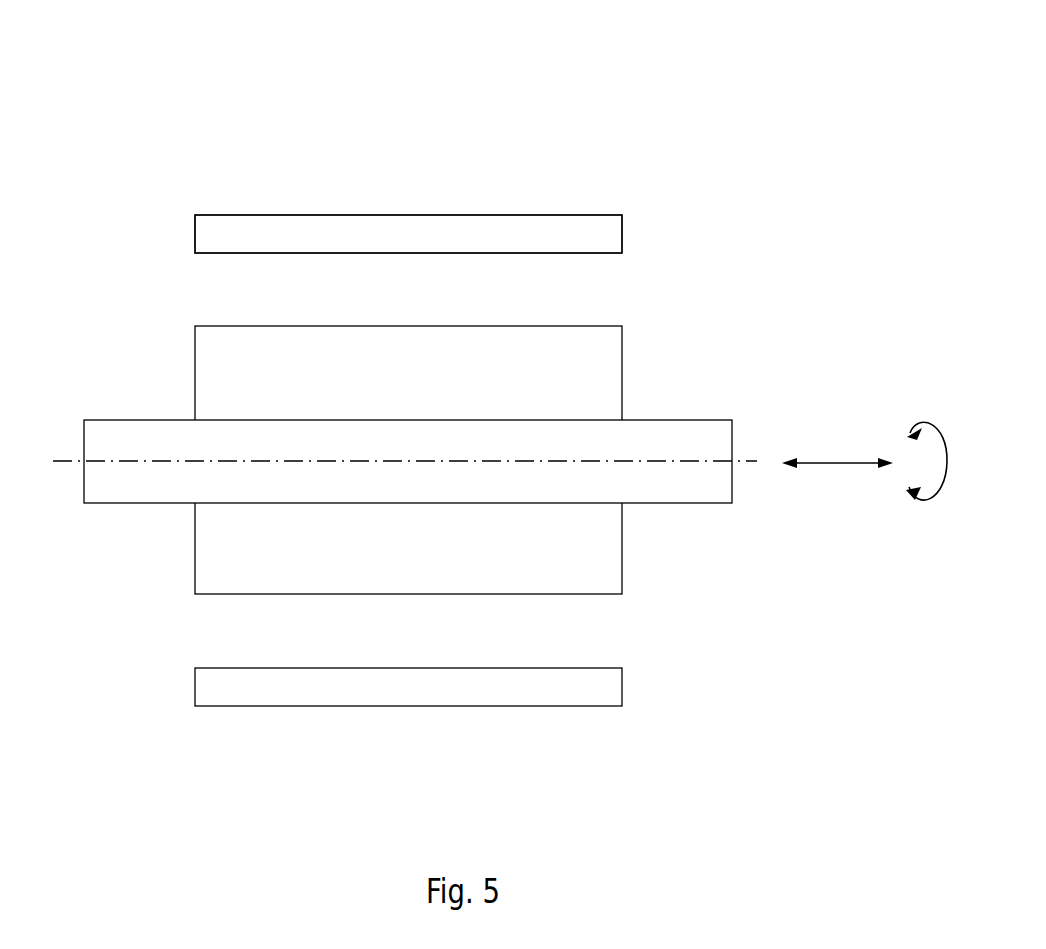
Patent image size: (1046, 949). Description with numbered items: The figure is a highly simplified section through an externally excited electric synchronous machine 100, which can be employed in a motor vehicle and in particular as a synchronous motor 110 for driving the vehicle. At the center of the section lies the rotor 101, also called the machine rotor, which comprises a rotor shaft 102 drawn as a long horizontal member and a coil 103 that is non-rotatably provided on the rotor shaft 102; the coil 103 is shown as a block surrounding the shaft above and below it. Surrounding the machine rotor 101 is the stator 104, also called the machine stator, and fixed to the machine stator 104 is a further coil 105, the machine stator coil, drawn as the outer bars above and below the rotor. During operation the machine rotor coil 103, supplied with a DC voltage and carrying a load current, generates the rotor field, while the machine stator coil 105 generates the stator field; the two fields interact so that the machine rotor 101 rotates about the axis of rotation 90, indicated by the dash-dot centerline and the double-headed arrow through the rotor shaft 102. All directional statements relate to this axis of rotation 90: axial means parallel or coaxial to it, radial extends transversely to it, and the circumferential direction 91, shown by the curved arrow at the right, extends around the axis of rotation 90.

The externally excited electric synchronous machine 100 is at (470, 391).
The synchronous motor 110 is at (766, 152).
The rotor 101 is at (668, 345).
The rotor shaft 102 is at (120, 430).
The coil 103 is at (403, 347).
The stator 104 is at (622, 192).
The coil 105 is at (408, 226).
The axis of rotation 90 is at (837, 460).
The circumferential direction 91 is at (920, 420).